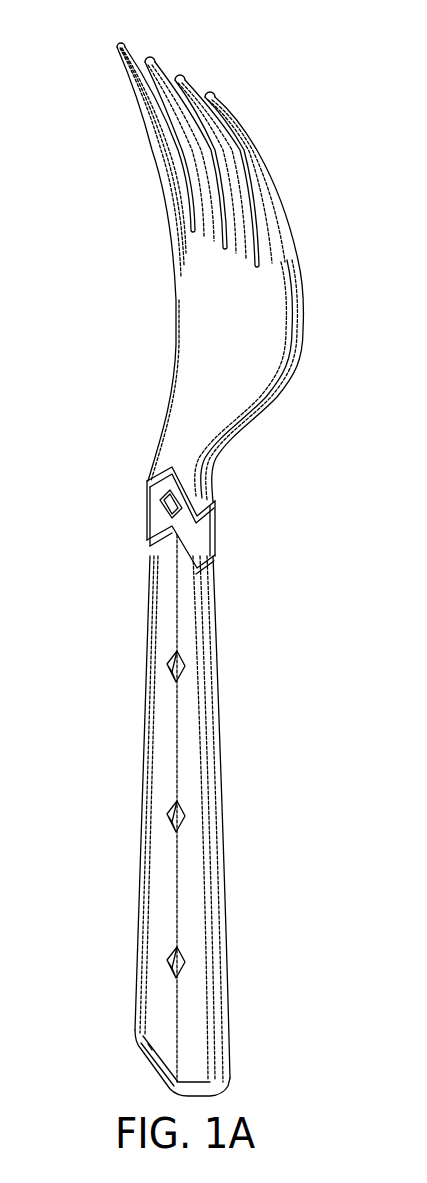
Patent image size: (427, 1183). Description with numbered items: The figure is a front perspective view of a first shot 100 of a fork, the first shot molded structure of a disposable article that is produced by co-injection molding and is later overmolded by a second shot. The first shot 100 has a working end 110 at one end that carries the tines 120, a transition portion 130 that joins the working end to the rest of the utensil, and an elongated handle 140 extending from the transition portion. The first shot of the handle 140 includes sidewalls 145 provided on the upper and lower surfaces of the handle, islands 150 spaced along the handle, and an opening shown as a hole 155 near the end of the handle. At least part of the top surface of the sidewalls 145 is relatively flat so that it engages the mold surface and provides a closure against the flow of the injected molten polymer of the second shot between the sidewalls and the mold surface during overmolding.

The first shot 100 is at (280, 614).
The working end 110 is at (310, 151).
The tines 120 is at (113, 45).
The transition portion 130 is at (128, 489).
The handle 140 is at (255, 873).
The sidewalls 145 is at (144, 735).
The islands 150 is at (167, 672).
The hole 155 is at (162, 1070).